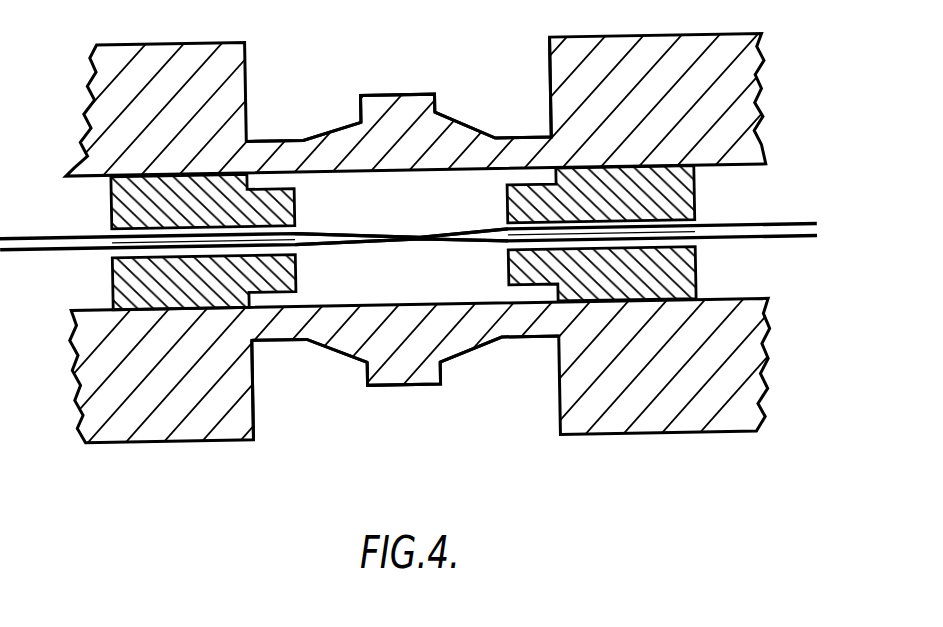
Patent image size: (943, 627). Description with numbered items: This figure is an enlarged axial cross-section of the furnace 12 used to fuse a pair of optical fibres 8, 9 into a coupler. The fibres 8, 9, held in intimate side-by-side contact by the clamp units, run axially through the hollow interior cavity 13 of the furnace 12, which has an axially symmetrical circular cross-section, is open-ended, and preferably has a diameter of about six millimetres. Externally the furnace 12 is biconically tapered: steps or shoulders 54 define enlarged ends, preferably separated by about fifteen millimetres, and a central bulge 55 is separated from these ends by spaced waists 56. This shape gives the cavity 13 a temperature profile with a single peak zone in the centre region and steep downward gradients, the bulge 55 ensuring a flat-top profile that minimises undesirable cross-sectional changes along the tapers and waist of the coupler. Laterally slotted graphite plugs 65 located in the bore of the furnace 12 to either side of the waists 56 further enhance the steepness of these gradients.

The optical fibre 8 is at (33, 236).
The optical fibre 9 is at (48, 254).
The furnace 12 is at (651, 444).
The hollow interior cavity 13 is at (419, 291).
The shoulders 54 is at (553, 68).
The central bulge 55 is at (412, 383).
The waists 56 is at (306, 143).
The graphite plugs 65 is at (133, 274).